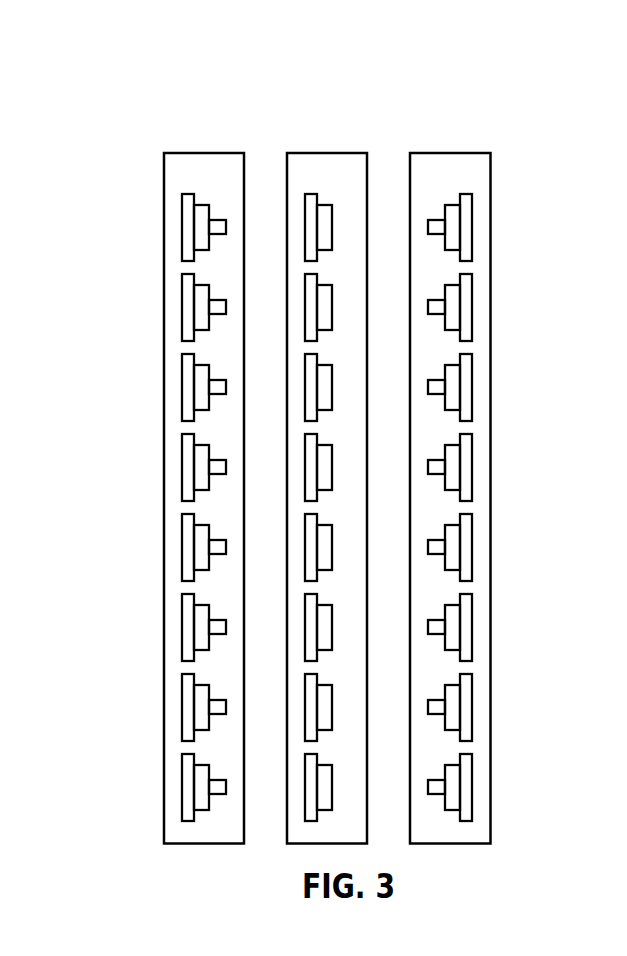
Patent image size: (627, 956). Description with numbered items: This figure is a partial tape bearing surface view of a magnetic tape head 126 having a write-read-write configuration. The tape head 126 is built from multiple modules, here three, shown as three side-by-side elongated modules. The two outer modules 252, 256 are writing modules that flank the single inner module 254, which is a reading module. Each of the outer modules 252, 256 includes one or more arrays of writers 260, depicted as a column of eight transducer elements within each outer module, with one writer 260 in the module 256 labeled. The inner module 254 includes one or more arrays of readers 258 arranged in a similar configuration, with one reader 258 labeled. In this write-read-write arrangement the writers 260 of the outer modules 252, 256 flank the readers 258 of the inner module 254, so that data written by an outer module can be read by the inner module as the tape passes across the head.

The tape head 126 is at (135, 123).
The outer module 252 is at (188, 143).
The inner module 254 is at (320, 143).
The outer module 256 is at (434, 143).
The readers 258 is at (334, 385).
The writers 260 is at (472, 465).